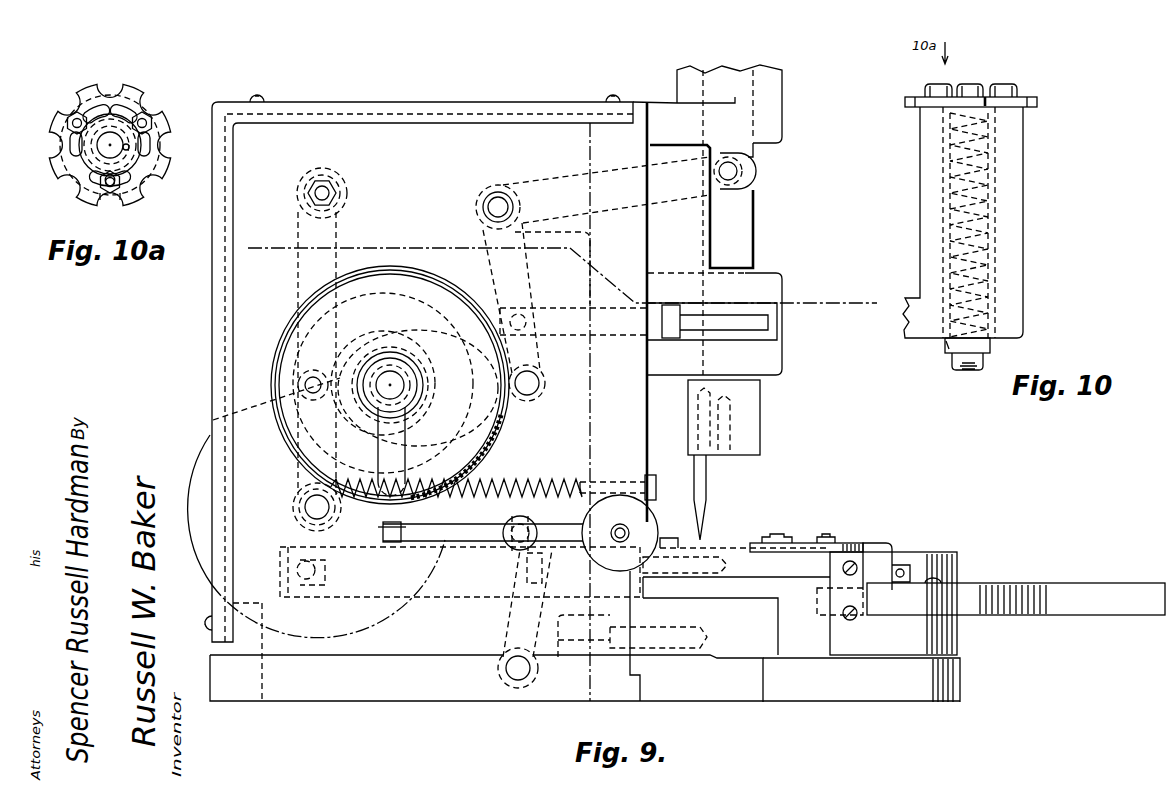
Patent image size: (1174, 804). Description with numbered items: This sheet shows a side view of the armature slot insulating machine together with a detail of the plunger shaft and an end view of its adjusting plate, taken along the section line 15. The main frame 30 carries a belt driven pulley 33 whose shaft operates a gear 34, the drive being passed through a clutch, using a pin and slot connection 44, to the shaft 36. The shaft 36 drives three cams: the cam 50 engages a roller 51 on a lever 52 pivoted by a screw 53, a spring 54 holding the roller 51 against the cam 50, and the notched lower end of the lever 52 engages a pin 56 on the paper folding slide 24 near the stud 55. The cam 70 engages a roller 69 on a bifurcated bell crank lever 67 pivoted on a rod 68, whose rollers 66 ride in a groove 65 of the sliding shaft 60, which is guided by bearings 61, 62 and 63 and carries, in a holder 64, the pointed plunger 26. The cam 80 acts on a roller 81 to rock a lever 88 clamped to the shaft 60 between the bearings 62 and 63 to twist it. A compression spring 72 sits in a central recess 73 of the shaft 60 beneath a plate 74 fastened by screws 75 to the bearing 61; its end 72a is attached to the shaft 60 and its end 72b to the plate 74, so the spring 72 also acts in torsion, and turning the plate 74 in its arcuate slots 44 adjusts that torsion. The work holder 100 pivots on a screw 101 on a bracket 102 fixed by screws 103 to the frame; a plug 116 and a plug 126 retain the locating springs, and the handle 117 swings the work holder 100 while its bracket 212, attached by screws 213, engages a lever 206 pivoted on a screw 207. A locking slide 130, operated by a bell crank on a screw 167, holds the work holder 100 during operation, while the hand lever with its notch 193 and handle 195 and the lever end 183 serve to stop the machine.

In FIG. 9, the section line 15 is at (271, 240).
In FIG. 9, the paper folding slide 24 is at (458, 590).
In FIG. 9, the pointed plunger 26 is at (702, 508).
In FIG. 9, the main frame 30 is at (632, 430).
In FIG. 9, the belt driven pulley 33 is at (204, 455).
In FIG. 9, the gear 34 is at (334, 521).
In FIG. 9, the shaft 36 is at (405, 384).
In FIG. 10A, the pin and slot connection 44 is at (97, 105).
In FIG. 9, the cam 50 is at (372, 332).
In FIG. 9, the roller 51 is at (276, 395).
In FIG. 9, the lever 52 is at (298, 278).
In FIG. 9, the screw 53 is at (330, 190).
In FIG. 9, the spring 54 is at (540, 483).
In FIG. 9, the stud 55 is at (322, 565).
In FIG. 9, the pin 56 is at (310, 588).
In FIG. 9, the sliding shaft 60 is at (740, 212).
In FIG. 10, the sliding shaft 60 is at (990, 346).
In FIG. 10A, the sliding shaft 60 is at (130, 112).
In FIG. 9, the bearing 61 is at (782, 106).
In FIG. 10, the bearing 61 is at (1012, 151).
In FIG. 10A, the bearing 61 is at (166, 154).
In FIG. 9, the bearing 62 is at (770, 290).
In FIG. 9, the bearing 63 is at (770, 355).
In FIG. 9, the needle holder 64 is at (752, 410).
In FIG. 9, the groove 65 is at (748, 172).
In FIG. 9, the rollers 66 is at (750, 188).
In FIG. 9, the bifurcated bell crank lever 67 is at (622, 173).
In FIG. 9, the rod 68 is at (498, 205).
In FIG. 9, the roller 69 is at (540, 385).
In FIG. 9, the cam 70 is at (460, 337).
In FIG. 10, the compression spring 72 is at (975, 224).
In FIG. 10A, the compression spring 72 is at (112, 135).
In FIG. 10, the spring end 72a is at (947, 349).
In FIG. 10, the spring end 72b is at (988, 97).
In FIG. 10A, the spring end 72b is at (128, 150).
In FIG. 10, the central recess 73 is at (975, 255).
In FIG. 10, the plate 74 is at (1040, 104).
In FIG. 10A, the plate 74 is at (150, 112).
In FIG. 10, the screws 75 is at (1010, 86).
In FIG. 10A, the screws 75 is at (72, 112).
In FIG. 9, the cam 80 is at (445, 283).
In FIG. 9, the roller 81 is at (537, 372).
In FIG. 9, the lever 88 is at (773, 312).
In FIG. 9, the work holder 100 is at (962, 608).
In FIG. 9, the screw 101 is at (940, 581).
In FIG. 9, the work holder bracket 102 is at (727, 692).
In FIG. 9, the screws 103 is at (573, 648).
In FIG. 9, the plug 116 is at (856, 616).
In FIG. 9, the handle 117 is at (1120, 583).
In FIG. 9, the plug 126 is at (855, 565).
In FIG. 9, the slide 130 is at (580, 570).
In FIG. 9, the screw 167 is at (505, 671).
In FIG. 9, the end of lever 183 is at (405, 428).
In FIG. 9, the notch 193 is at (405, 524).
In FIG. 9, the handle 195 is at (646, 528).
In FIG. 9, the lever 206 is at (752, 546).
In FIG. 9, the screw 207 is at (777, 538).
In FIG. 9, the bracket 212 is at (892, 548).
In FIG. 9, the screws 213 is at (826, 537).